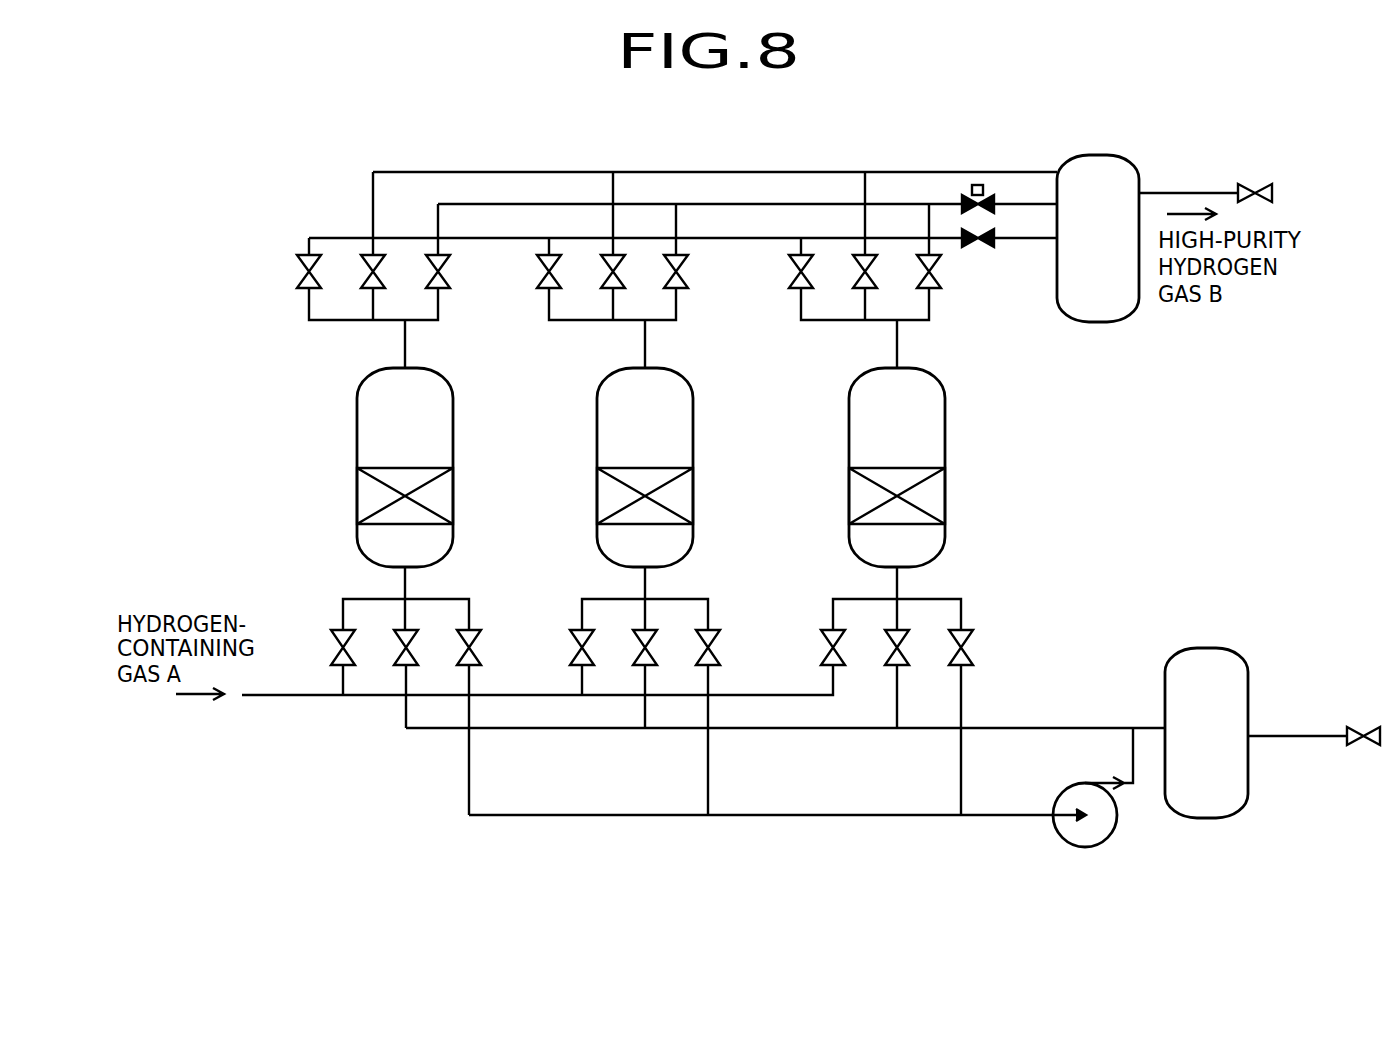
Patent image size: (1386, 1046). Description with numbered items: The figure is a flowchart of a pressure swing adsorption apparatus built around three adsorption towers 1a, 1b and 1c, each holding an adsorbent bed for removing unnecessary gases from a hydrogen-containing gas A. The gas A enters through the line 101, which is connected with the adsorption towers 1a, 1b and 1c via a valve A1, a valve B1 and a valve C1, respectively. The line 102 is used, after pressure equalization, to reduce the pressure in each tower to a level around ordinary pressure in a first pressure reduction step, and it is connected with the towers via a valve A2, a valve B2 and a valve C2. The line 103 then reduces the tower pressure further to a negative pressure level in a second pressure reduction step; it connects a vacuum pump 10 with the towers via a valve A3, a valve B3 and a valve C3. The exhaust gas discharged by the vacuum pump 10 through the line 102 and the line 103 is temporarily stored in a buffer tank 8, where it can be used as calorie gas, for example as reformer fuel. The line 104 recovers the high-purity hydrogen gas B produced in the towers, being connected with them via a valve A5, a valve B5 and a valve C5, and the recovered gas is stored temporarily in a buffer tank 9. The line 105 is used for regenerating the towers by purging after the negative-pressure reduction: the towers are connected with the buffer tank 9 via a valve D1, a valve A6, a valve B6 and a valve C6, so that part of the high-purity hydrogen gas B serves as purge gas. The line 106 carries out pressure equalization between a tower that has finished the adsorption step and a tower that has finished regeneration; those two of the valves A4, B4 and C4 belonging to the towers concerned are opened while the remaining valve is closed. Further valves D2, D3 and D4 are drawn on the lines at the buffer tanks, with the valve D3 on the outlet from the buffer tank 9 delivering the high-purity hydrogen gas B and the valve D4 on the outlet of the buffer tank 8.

The adsorption tower 1a is at (357, 437).
The adsorption tower 1b is at (597, 437).
The adsorption tower 1c is at (849, 437).
The buffer tank 8 is at (1207, 648).
The buffer tank 9 is at (1097, 322).
The vacuum pump 10 is at (1085, 847).
The line 101 is at (537, 694).
The line 102 is at (785, 742).
The line 103 is at (777, 826).
The line 104 is at (715, 157).
The line 105 is at (747, 190).
The line 106 is at (683, 223).
The valve A1 is at (329, 647).
The valve A2 is at (392, 647).
The valve A3 is at (455, 647).
The valve A4 is at (295, 271).
The valve A5 is at (359, 271).
The valve A6 is at (424, 271).
The valve B1 is at (568, 647).
The valve B2 is at (631, 647).
The valve B3 is at (694, 647).
The valve B4 is at (535, 271).
The valve B5 is at (599, 271).
The valve B6 is at (662, 271).
The valve C1 is at (818, 647).
The valve C2 is at (882, 647).
The valve C3 is at (946, 647).
The valve C4 is at (786, 271).
The valve C5 is at (850, 271).
The valve C6 is at (914, 271).
The valve D1 is at (962, 193).
The valve D2 is at (979, 251).
The valve D3 is at (1205, 178).
The valve D4 is at (1314, 720).